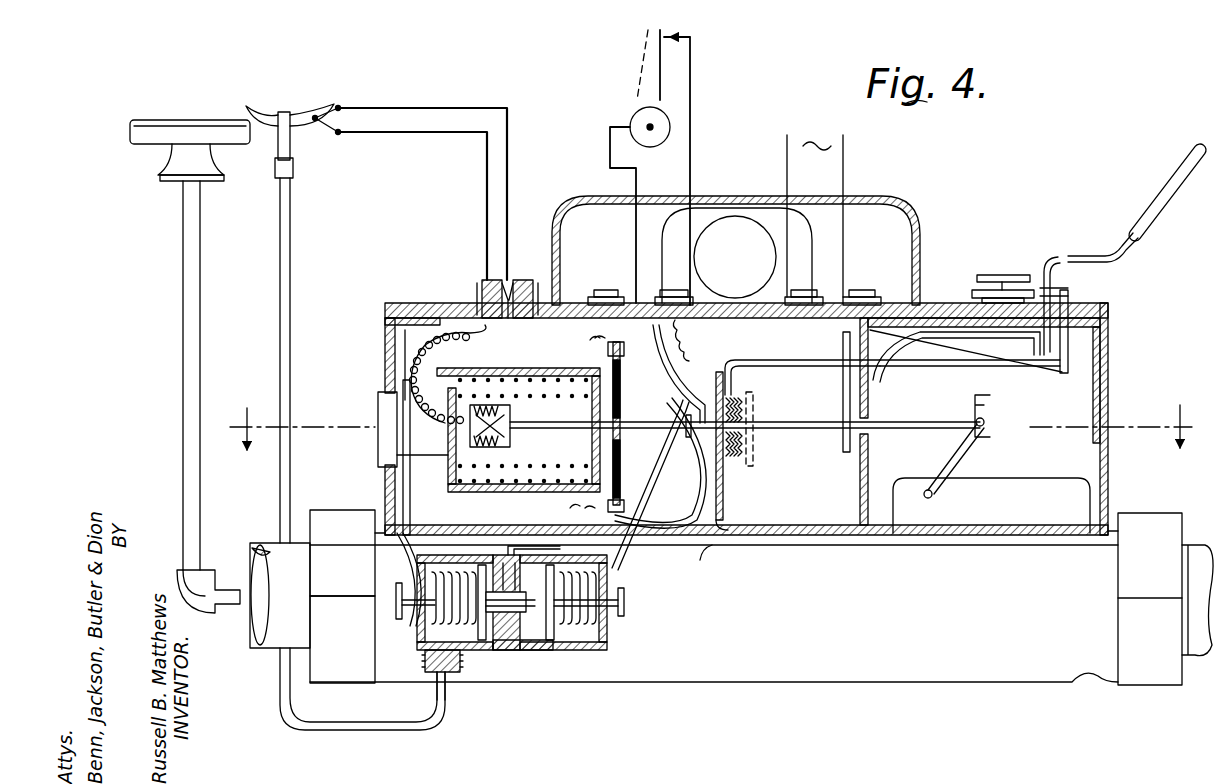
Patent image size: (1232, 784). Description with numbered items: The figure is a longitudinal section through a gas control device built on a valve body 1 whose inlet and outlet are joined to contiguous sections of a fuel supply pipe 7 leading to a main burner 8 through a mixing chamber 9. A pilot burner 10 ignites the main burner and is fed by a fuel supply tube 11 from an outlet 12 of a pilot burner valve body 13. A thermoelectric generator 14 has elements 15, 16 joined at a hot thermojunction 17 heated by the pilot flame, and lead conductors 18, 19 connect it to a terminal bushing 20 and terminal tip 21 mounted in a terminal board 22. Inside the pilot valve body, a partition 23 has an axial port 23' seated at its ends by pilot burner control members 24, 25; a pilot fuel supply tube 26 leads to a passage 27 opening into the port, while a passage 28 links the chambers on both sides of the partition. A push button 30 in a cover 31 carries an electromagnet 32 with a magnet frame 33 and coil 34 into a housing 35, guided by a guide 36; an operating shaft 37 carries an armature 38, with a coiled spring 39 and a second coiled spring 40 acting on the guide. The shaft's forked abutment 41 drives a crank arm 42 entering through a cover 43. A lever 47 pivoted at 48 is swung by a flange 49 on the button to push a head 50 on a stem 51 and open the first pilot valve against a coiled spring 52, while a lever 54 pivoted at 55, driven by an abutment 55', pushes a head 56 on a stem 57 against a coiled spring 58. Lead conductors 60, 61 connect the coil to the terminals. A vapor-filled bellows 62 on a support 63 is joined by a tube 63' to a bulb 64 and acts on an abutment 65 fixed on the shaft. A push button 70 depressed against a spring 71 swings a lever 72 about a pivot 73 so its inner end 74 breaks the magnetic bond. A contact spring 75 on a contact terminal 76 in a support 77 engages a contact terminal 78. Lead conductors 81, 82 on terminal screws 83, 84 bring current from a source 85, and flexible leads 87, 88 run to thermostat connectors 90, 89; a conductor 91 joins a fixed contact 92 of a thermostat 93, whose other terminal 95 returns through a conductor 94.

The valve body 1 is at (775, 660).
The fuel supply pipe 7 is at (183, 342).
The main burner 8 is at (172, 118).
The mixing chamber 9 is at (168, 165).
The pilot burner 10 is at (283, 110).
The fuel supply tube 11 is at (280, 350).
The outlet 12 is at (437, 685).
The pilot burner valve body 13 is at (478, 625).
The thermoelectric generator 14 is at (334, 103).
The thermoelectric generator element 15 is at (340, 110).
The thermoelectric generator element 16 is at (340, 134).
The hot thermojunction 17 is at (316, 115).
The lead conductor 18 is at (436, 133).
The lead conductor 19 is at (467, 107).
The terminal bushing 20 is at (482, 292).
The terminal tip 21 is at (512, 282).
The terminal board 22 is at (385, 310).
The partition 23 is at (495, 635).
The axial port 23' is at (523, 657).
The pilot burner control member 24 is at (425, 660).
The pilot burner control member 25 is at (575, 645).
The pilot fuel supply tube 26 is at (750, 550).
The passage 27 is at (509, 545).
The passage 28 is at (512, 640).
The push button 30 is at (380, 404).
The cover 31 is at (388, 492).
The electromagnet 32 is at (512, 425).
The magnet frame 33 is at (500, 411).
The coil 34 is at (500, 441).
The housing 35 is at (485, 492).
The guide 36 is at (400, 457).
The operating shaft 37 is at (792, 428).
The armature 38 is at (620, 443).
The coiled spring 39 is at (490, 375).
The second coiled spring 40 is at (520, 395).
The forked abutment 41 is at (982, 398).
The crank arm 42 is at (955, 470).
The cover 43 is at (1032, 480).
The lever 47 is at (372, 510).
The pivot 48 is at (380, 540).
The flange 49 is at (403, 478).
The head 50 is at (396, 595).
The stem 51 is at (405, 605).
The coiled spring 52 is at (418, 578).
The lever 54 is at (635, 548).
The pivot 55 is at (710, 558).
The abutment 55' is at (672, 374).
The head 56 is at (626, 600).
The stem 57 is at (612, 625).
The coiled spring 58 is at (602, 638).
The lead conductor 60 is at (420, 342).
The lead conductor 61 is at (410, 355).
The vapor-filled bellows 62 is at (754, 452).
The support 63 is at (764, 440).
The tube 63' is at (908, 302).
The bulb 64 is at (1168, 186).
The abutment 65 is at (752, 402).
The push button 70 is at (988, 273).
The spring 71 is at (972, 292).
The lever 72 is at (1062, 345).
The pivot 73 is at (1100, 342).
The inner end 74 is at (882, 378).
The contact spring 75 is at (724, 492).
The contact terminal 76 is at (628, 495).
The support 77 is at (620, 468).
The contact terminal 78 is at (608, 350).
The lead conductor 81 is at (790, 212).
The lead conductor 82 is at (843, 233).
The terminal screw 83 is at (795, 292).
The terminal screw 84 is at (860, 292).
The source 85 is at (845, 156).
The flexible lead 87 is at (690, 338).
The flexible lead 88 is at (608, 345).
The thermostat connector 89 is at (595, 290).
The thermostat connector 90 is at (672, 296).
The conductor 91 is at (692, 143).
The fixed contact 92 is at (682, 37).
The thermostat 93 is at (640, 120).
The conductor 94 is at (609, 165).
The terminal 95 is at (642, 68).